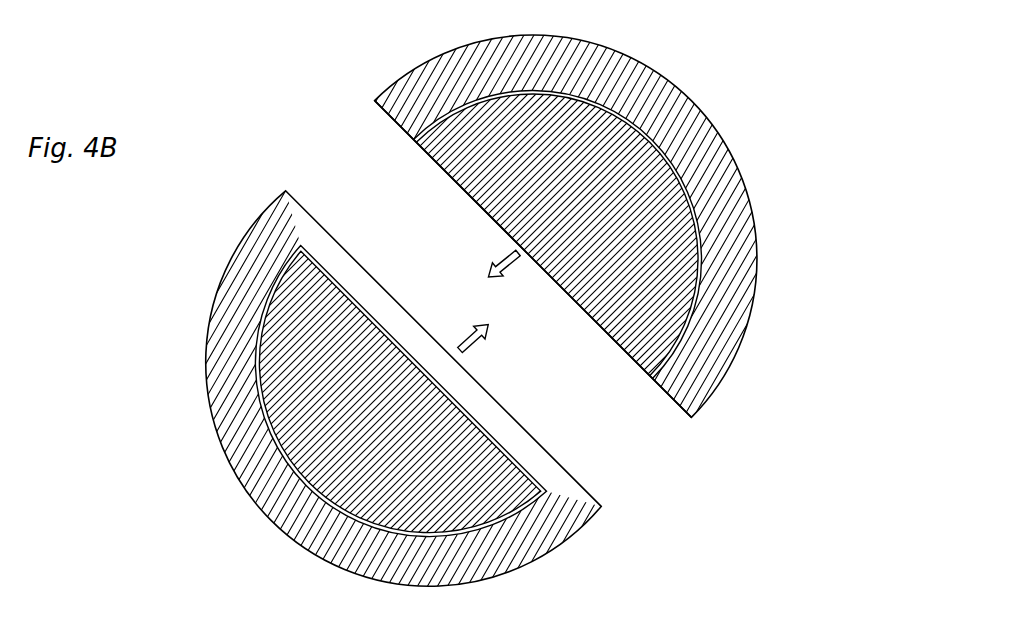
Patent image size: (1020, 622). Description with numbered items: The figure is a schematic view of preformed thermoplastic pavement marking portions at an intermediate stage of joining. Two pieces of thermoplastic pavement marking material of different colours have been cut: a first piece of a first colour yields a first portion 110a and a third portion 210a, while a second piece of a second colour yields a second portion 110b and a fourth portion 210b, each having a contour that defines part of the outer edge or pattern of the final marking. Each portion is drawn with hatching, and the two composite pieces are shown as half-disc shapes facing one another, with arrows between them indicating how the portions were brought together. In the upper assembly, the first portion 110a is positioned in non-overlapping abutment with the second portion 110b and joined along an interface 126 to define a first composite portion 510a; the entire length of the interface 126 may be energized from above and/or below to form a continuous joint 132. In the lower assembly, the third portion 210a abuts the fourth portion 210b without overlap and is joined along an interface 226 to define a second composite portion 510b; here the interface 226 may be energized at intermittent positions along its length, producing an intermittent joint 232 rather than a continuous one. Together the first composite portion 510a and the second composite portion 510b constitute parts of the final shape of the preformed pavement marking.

The first composite portion 510a is at (792, 137).
The second composite portion 510b is at (158, 411).
The first portion 110a is at (553, 148).
The second portion 110b is at (684, 124).
The continuous joint 132 is at (641, 137).
The interface 126 is at (664, 375).
The third portion 210a is at (291, 281).
The fourth portion 210b is at (219, 328).
The interface 226 is at (273, 427).
The intermittent joint 232 is at (402, 528).